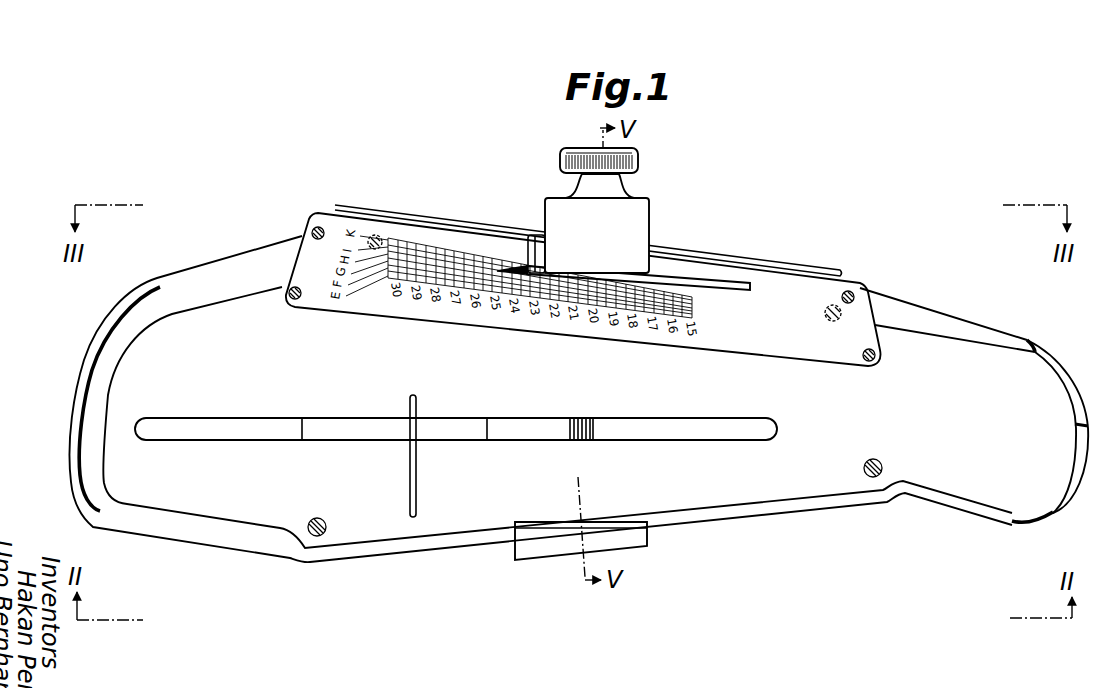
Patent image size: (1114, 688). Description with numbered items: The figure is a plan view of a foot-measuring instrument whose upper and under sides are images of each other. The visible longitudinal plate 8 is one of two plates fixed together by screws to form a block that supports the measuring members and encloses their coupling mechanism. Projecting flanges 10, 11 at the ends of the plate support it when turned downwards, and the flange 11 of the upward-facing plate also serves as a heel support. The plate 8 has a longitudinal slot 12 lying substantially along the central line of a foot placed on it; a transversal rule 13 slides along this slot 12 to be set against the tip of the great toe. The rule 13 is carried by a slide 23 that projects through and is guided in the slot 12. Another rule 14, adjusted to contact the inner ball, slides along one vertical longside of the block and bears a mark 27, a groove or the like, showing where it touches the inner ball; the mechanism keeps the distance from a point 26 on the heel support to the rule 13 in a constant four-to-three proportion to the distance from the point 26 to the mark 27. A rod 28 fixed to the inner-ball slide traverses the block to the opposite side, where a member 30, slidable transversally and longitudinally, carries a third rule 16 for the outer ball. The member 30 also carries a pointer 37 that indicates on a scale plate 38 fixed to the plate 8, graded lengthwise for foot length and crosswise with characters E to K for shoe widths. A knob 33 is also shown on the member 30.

The longitudinal plate 8 is at (552, 399).
The projecting flange 10 is at (114, 313).
The projecting flange 11 is at (1050, 514).
The longitudinal slot 12 is at (221, 426).
The transversal rule 13 is at (409, 468).
The rule 14 is at (531, 522).
The third rule 16 is at (725, 283).
The slide 23 is at (344, 425).
The point on heel support 26 is at (1073, 428).
The mark 27 is at (585, 522).
The rod 28 is at (585, 423).
The member 30 is at (650, 219).
The knob 33 is at (640, 164).
The pointer 37 is at (512, 264).
The plate 38 is at (796, 288).